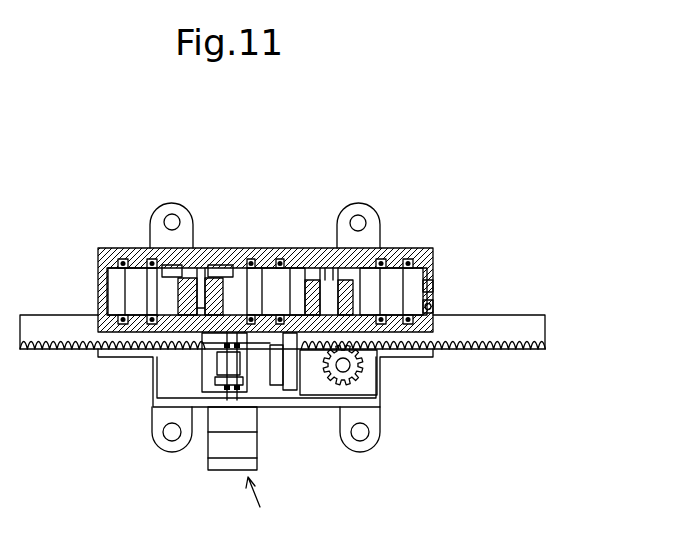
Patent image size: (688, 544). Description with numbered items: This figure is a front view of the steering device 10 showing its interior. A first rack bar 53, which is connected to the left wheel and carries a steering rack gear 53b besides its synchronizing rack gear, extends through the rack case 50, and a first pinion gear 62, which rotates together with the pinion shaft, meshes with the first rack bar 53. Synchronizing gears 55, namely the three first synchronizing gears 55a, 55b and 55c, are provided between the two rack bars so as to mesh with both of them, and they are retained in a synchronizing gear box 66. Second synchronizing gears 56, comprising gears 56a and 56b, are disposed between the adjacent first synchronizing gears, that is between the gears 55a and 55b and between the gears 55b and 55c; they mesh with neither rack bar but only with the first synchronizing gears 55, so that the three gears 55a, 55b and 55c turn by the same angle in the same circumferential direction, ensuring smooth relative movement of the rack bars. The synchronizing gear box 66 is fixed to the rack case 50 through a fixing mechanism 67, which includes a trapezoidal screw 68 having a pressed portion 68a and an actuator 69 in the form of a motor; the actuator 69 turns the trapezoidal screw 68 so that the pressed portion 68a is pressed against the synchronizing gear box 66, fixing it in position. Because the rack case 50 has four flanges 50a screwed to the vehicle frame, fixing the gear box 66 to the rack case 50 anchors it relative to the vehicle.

The steering device 10 is at (461, 243).
The rack case 50 is at (398, 348).
The flange 50a is at (158, 218).
The first rack bar 53 is at (530, 337).
The steering rack gear 53b is at (510, 350).
The synchronizing gears 55 is at (360, 157).
The first synchronizing gear 55a is at (140, 285).
The first synchronizing gear 55b is at (264, 262).
The first synchronizing gear 55c is at (395, 277).
The second synchronizing gears 56 is at (553, 213).
The second synchronizing gear 56a is at (430, 303).
The second synchronizing gear 56b is at (432, 290).
The first pinion gear 62 is at (360, 375).
The synchronizing gear box 66 is at (358, 322).
The fixing mechanism 67 is at (262, 504).
The trapezoidal screw 68 is at (233, 362).
The pressed portion 68a is at (268, 352).
The actuator 69 is at (228, 447).